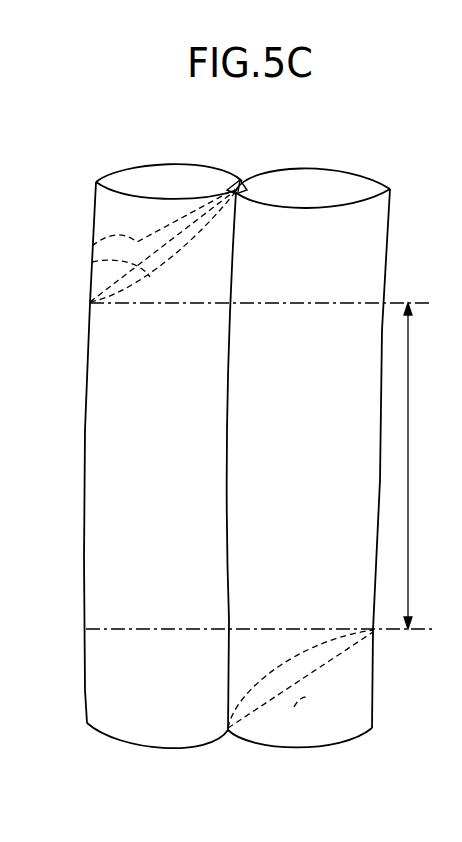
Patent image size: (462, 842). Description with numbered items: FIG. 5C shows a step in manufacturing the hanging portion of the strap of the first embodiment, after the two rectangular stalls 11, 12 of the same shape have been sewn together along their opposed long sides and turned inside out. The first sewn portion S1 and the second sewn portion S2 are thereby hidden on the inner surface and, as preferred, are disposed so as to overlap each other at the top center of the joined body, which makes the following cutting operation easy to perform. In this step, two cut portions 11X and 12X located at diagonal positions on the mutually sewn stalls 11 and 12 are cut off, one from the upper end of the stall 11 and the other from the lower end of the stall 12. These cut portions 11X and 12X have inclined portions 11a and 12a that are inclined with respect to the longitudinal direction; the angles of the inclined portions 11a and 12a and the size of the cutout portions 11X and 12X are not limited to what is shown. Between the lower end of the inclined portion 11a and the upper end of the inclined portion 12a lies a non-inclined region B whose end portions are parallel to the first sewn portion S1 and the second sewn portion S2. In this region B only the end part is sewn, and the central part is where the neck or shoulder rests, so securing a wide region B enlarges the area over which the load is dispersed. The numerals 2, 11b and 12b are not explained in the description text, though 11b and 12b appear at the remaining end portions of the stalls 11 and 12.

The drill 2 is at (120, 461).
The stall 11 is at (130, 507).
The cut portion 11X is at (113, 217).
The inclined portion 11a is at (92, 261).
The lower end portion of first body 11b is at (86, 678).
The stall 12 is at (357, 525).
The cut portion 12X is at (353, 705).
The inclined portion 12a is at (270, 673).
The upper end portion of second body 12b is at (386, 231).
The first sewn portion S1 is at (246, 188).
The second sewn portion S2 is at (233, 185).
The non-inclined region B is at (259, 466).